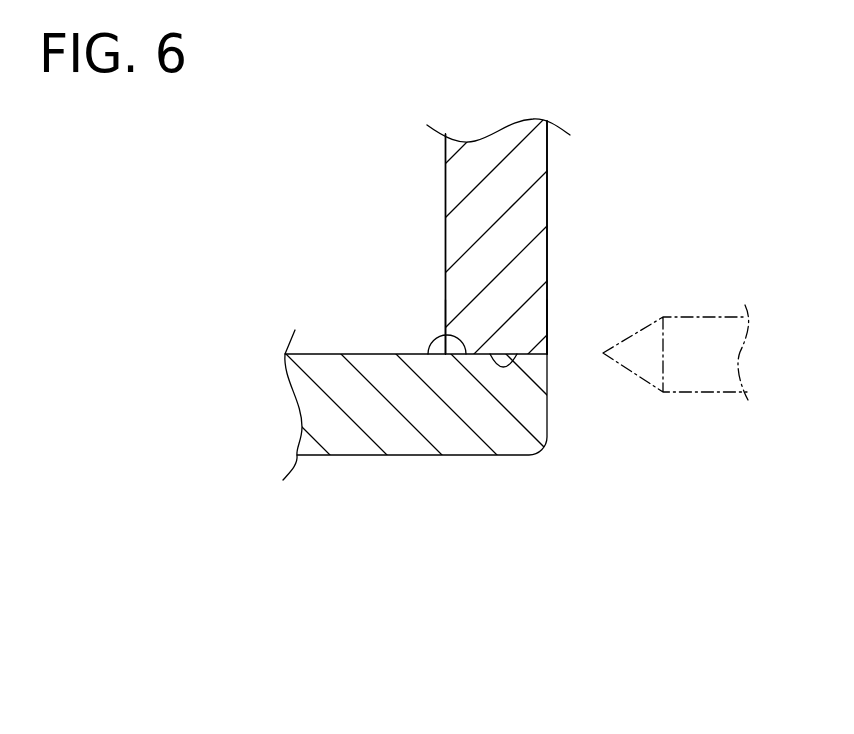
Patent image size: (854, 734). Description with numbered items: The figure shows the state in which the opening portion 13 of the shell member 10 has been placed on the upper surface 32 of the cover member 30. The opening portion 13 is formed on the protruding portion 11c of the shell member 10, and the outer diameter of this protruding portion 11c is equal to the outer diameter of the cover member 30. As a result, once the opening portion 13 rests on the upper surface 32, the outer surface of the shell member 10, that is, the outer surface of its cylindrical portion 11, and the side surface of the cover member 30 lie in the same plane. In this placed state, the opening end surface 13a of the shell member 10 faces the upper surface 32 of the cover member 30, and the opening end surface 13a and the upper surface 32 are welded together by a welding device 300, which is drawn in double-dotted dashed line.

The shell member 10 is at (497, 237).
The cylindrical portion 11 is at (497, 237).
The protruding portion 11c is at (530, 207).
The opening portion 13 is at (548, 305).
The opening end surface 13a is at (547, 343).
The cover member 30 is at (483, 455).
The upper surface 32 is at (430, 357).
The welding device 300 is at (685, 393).